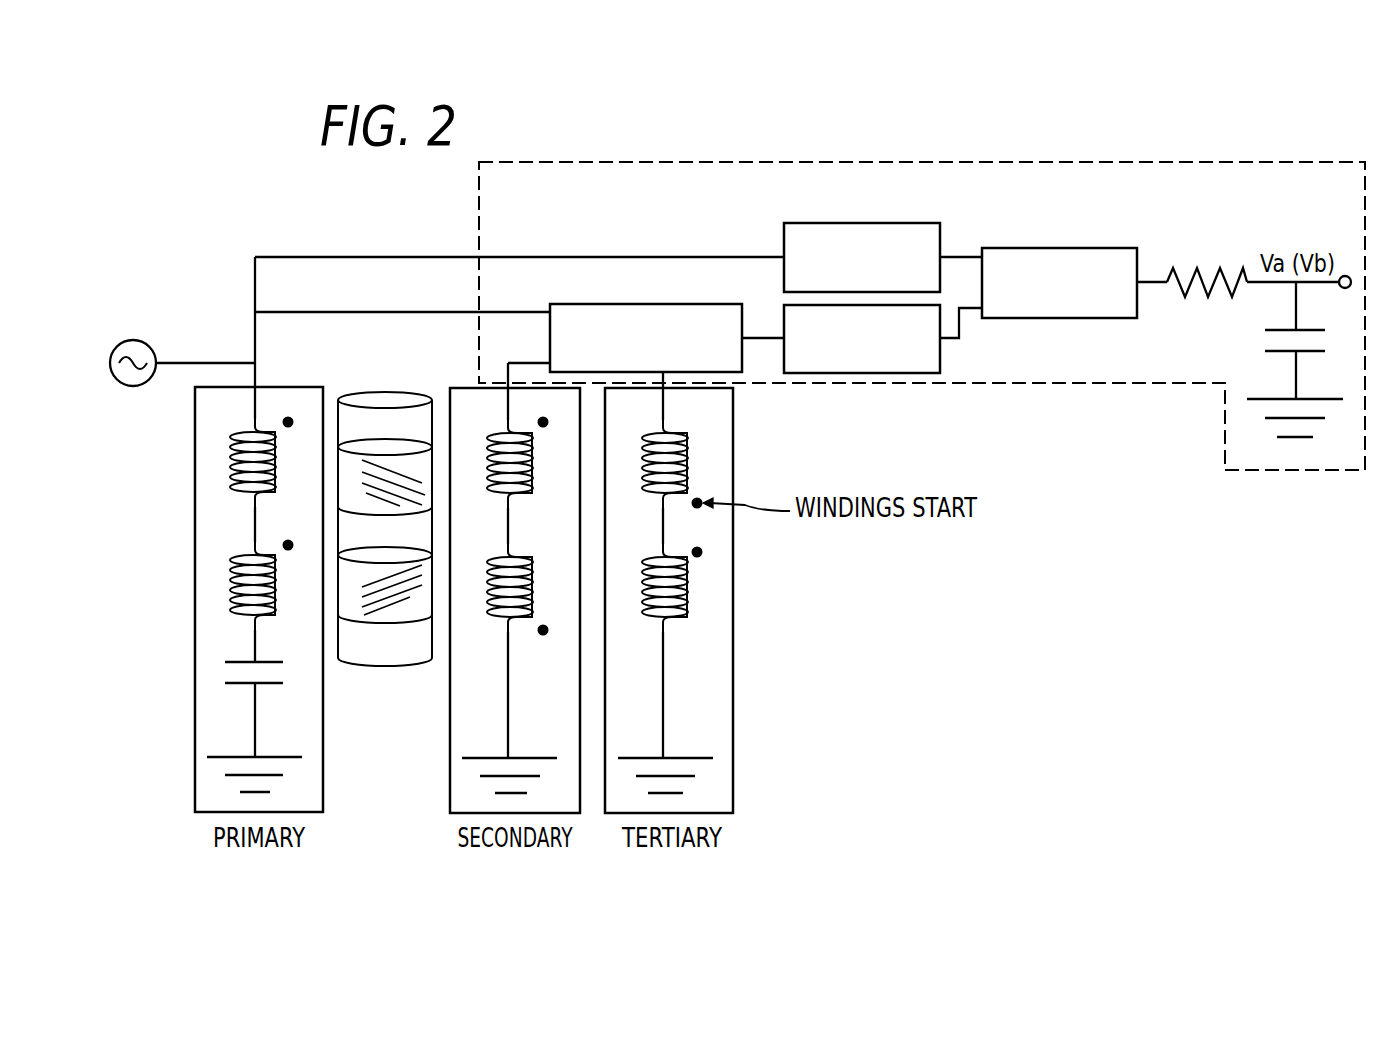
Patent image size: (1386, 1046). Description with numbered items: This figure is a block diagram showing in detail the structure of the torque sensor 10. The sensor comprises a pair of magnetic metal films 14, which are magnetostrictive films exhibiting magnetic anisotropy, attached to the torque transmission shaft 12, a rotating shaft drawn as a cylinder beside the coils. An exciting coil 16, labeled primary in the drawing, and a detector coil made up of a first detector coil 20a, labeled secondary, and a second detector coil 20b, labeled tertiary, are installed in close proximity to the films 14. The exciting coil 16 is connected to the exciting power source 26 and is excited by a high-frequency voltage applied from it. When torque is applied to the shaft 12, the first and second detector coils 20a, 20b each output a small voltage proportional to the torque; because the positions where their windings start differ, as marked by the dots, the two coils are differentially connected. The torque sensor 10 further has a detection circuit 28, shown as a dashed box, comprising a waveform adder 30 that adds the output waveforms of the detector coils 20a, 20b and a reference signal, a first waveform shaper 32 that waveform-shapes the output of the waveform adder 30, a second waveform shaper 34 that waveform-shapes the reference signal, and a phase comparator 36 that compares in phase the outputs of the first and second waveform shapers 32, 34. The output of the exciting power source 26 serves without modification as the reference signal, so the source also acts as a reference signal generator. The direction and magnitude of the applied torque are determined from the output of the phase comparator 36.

The torque sensor 10 is at (748, 468).
The torque transmission shaft 12 is at (358, 393).
The magnetic metal films 14 is at (352, 607).
The exciting coil 16 is at (232, 570).
The first detector coil 20a is at (526, 546).
The second detector coil 20b is at (657, 546).
The exciting power source 26 is at (133, 340).
The detection circuit 28 is at (1030, 162).
The waveform adder 30 is at (548, 305).
The first waveform shaper 32 is at (898, 374).
The second waveform shaper 34 is at (884, 223).
The phase comparator 36 is at (1024, 248).